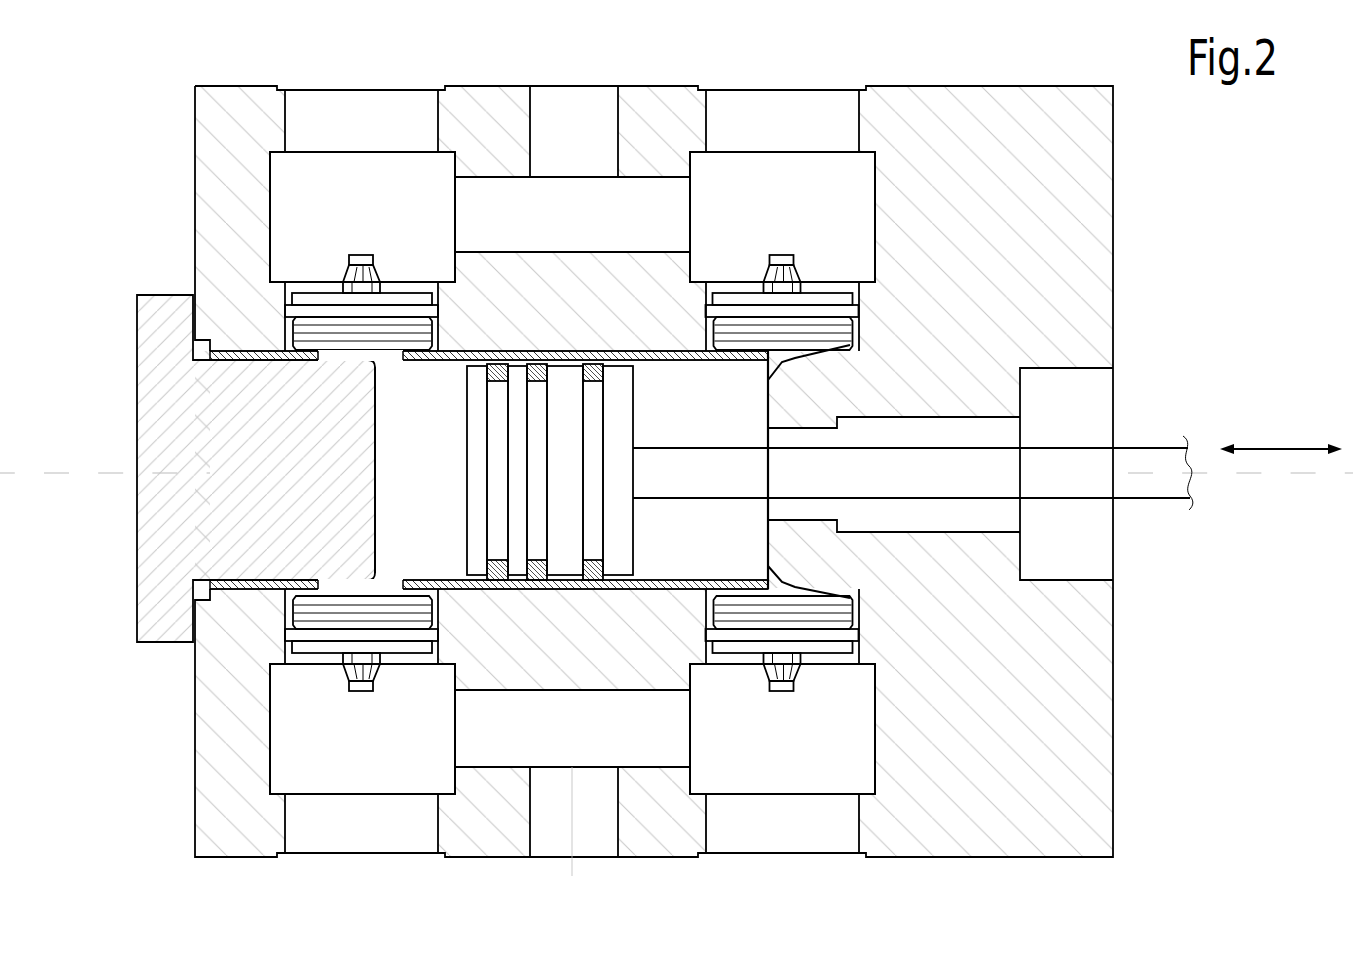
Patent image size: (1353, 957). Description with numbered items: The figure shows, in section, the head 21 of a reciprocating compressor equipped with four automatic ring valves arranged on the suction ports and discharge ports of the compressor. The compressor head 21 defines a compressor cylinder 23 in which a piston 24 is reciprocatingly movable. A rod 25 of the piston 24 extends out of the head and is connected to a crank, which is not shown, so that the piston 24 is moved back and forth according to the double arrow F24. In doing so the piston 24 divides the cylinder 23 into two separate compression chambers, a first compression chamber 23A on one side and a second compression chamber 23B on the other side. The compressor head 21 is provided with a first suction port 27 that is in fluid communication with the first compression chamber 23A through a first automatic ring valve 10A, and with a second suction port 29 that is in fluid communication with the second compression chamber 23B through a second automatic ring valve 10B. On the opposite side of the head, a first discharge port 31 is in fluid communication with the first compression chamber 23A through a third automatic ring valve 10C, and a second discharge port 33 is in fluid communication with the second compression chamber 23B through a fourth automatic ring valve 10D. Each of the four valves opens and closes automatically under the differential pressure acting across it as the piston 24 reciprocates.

The compressor head 21 is at (163, 828).
The compressor cylinder 23 is at (661, 378).
The first compression chamber 23A is at (445, 430).
The second compression chamber 23B is at (734, 562).
The piston 24 is at (481, 520).
The rod 25 is at (705, 462).
The first suction port 27 is at (331, 212).
The second suction port 29 is at (740, 212).
The first discharge port 31 is at (332, 766).
The second discharge port 33 is at (748, 766).
The first automatic ring valve 10A is at (404, 280).
The second automatic ring valve 10B is at (822, 280).
The third automatic ring valve 10C is at (410, 672).
The fourth automatic ring valve 10D is at (834, 672).
The double arrow F24 is at (1279, 447).